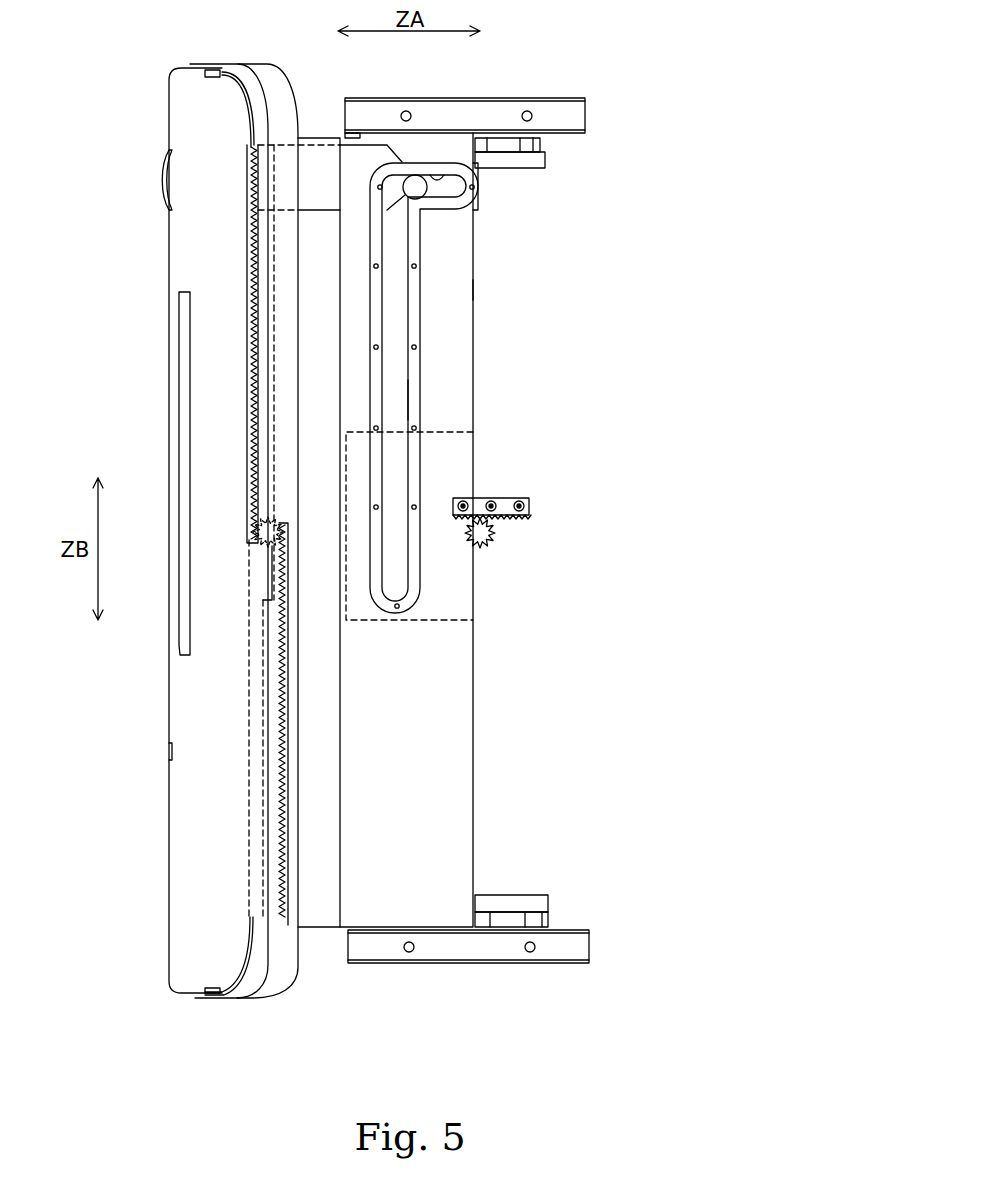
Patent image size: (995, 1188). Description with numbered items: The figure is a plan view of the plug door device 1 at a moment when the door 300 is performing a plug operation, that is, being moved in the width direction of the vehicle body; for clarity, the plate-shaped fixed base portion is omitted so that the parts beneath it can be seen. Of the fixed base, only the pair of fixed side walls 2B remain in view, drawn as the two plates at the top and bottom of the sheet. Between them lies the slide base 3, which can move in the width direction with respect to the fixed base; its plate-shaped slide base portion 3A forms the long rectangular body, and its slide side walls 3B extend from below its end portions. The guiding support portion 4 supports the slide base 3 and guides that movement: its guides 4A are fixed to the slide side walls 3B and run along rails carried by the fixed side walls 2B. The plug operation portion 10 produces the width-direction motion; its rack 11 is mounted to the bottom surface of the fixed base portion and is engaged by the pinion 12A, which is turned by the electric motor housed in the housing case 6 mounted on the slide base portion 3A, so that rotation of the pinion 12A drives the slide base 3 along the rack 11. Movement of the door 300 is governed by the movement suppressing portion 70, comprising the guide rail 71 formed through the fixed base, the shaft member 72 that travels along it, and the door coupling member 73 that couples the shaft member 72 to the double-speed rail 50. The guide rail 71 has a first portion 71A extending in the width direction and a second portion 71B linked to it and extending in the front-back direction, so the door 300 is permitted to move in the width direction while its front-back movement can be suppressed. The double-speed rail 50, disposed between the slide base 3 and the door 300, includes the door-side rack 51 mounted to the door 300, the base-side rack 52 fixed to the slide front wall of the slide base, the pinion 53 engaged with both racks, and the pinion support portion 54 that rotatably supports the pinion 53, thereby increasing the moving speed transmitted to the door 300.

The plug door device 1 is at (604, 68).
The fixed side walls 2B is at (491, 110).
The slide base 3 is at (474, 332).
The slide base portion 3A is at (474, 292).
The slide side walls 3B is at (529, 160).
The guiding support portion 4 is at (540, 534).
The guides 4A is at (545, 146).
The housing case 6 is at (437, 622).
The plug operation portion 10 is at (516, 499).
The rack 11 is at (530, 505).
The pinion 12A is at (486, 534).
The double-speed rail 50 is at (230, 184).
The door-side rack 51 is at (260, 306).
The base-side rack 52 is at (270, 683).
The pinion 53 is at (258, 542).
The pinion support portion 54 is at (250, 580).
The movement suppressing portion 70 is at (496, 222).
The guide rail 71 is at (420, 258).
The first portion 71A is at (437, 176).
The second portion 71B is at (402, 398).
The shaft member 72 is at (418, 188).
The door coupling member 73 is at (317, 151).
The door 300 is at (177, 251).